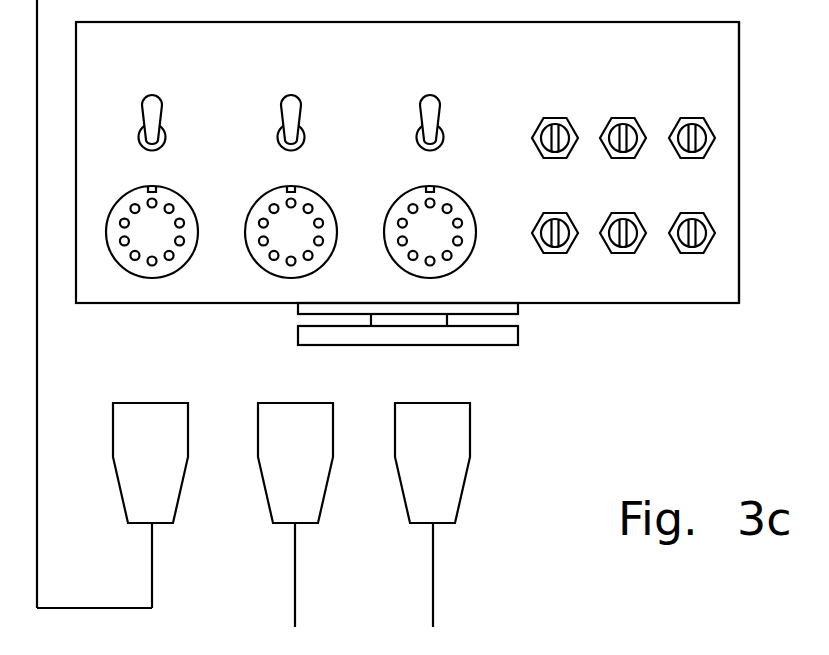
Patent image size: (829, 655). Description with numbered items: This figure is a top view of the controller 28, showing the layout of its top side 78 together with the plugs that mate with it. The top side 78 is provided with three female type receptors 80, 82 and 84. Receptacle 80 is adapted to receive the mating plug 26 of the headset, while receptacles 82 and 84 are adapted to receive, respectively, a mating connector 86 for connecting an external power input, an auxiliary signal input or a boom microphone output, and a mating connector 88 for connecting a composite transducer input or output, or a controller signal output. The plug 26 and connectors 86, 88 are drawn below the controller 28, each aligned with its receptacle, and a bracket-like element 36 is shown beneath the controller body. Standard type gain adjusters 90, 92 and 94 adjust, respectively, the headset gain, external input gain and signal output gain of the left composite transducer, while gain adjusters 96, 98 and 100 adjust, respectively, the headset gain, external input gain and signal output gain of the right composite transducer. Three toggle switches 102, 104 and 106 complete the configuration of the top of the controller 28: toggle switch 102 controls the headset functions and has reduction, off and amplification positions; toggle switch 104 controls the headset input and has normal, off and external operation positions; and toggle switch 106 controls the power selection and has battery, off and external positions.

The mating plug 26 is at (175, 403).
The controller 28 is at (740, 257).
The mounting bracket 36 is at (518, 333).
The top side 78 is at (740, 130).
The female type receptor 80 is at (148, 187).
The female type receptor 82 is at (247, 253).
The female type receptor 84 is at (422, 187).
The mating connector 86 is at (328, 403).
The mating connector 88 is at (463, 403).
The gain adjuster 90 is at (578, 128).
The gain adjuster 92 is at (647, 128).
The gain adjuster 94 is at (723, 130).
The gain adjuster 96 is at (540, 230).
The gain adjuster 98 is at (607, 247).
The gain adjuster 100 is at (712, 225).
The toggle switch 102 is at (140, 150).
The toggle switch 104 is at (302, 150).
The toggle switch 106 is at (418, 150).